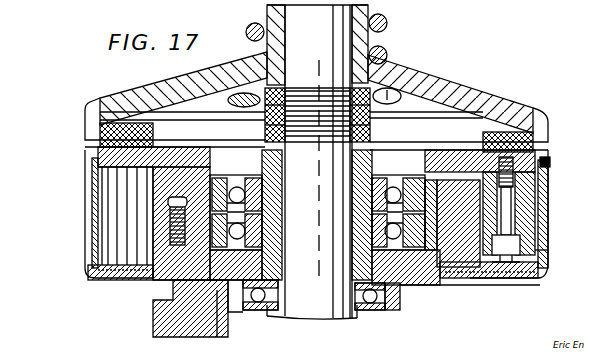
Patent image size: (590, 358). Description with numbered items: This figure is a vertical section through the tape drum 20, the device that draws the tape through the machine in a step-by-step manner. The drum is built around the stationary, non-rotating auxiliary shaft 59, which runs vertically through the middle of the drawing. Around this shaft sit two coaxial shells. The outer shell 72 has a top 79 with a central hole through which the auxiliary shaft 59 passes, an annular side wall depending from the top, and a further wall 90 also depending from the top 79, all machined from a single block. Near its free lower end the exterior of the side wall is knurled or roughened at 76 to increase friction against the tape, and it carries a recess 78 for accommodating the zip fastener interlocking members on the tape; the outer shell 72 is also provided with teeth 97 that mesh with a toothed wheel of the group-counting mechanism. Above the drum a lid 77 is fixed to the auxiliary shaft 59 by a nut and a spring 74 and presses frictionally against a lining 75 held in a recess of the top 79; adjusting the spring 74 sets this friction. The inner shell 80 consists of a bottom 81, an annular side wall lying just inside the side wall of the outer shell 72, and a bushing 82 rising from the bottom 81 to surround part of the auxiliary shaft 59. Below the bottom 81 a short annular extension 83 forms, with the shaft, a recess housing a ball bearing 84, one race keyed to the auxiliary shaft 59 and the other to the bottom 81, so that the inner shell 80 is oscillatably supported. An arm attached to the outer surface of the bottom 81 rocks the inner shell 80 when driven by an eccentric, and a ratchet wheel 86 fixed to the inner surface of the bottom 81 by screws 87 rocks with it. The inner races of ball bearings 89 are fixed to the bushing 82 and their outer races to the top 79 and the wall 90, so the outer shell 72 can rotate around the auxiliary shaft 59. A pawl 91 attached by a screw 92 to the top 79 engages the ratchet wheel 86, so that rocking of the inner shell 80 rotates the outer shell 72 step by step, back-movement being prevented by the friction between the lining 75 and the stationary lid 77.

The tape drum 20 is at (548, 168).
The auxiliary shaft 59 is at (303, 262).
The outer shell 72 is at (92, 187).
The spring 74 is at (388, 22).
The lining 75 is at (110, 125).
The roughened surface 76 is at (549, 249).
The lid 77 is at (135, 100).
The recess 78 is at (84, 263).
The top 79 is at (103, 153).
The inner shell 80 is at (543, 208).
The bottom 81 is at (478, 270).
The bushing 82 is at (352, 238).
The annular extension 83 is at (398, 284).
The ball bearing 84 is at (158, 318).
The ratchet wheel 86 is at (170, 273).
The screws 87 is at (175, 214).
The ball bearings 89 is at (448, 283).
The wall 90 is at (465, 200).
The pawl 91 is at (522, 229).
The screw 92 is at (549, 160).
The teeth 97 is at (88, 264).